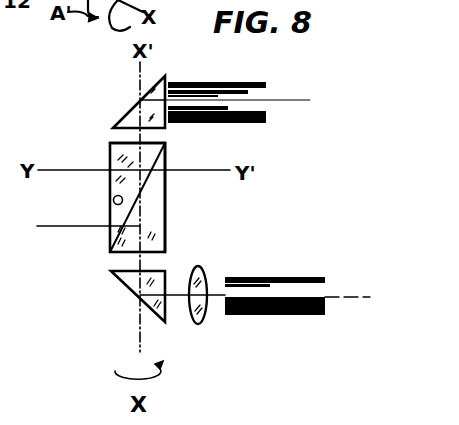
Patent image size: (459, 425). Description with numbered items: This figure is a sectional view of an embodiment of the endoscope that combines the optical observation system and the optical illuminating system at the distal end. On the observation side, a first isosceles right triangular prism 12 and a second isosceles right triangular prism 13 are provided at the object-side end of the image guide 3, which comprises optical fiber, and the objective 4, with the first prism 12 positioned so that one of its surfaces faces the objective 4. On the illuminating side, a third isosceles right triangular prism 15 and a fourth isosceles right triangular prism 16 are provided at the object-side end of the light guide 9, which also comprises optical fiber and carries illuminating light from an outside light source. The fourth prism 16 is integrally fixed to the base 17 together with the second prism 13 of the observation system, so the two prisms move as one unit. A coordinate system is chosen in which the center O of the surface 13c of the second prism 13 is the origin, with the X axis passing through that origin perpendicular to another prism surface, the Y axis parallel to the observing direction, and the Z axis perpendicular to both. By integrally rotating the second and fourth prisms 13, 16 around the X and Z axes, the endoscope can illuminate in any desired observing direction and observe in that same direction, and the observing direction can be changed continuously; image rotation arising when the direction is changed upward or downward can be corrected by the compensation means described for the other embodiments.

The image guide 3 is at (277, 278).
The objective 4 is at (203, 268).
The light guide 9 is at (208, 82).
The first isosceles right triangular prism 12 is at (125, 283).
The second isosceles right triangular prism 13 is at (110, 249).
The surface of the second prism 13c is at (113, 198).
The third isosceles right triangular prism 15 is at (118, 122).
The fourth isosceles right triangular prism 16 is at (112, 157).
The base 17 is at (157, 190).